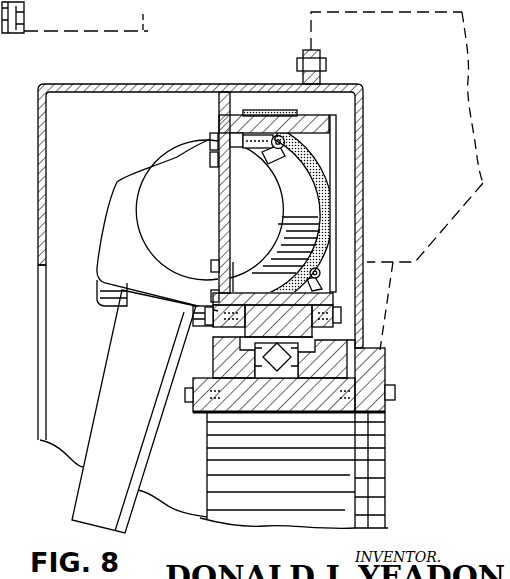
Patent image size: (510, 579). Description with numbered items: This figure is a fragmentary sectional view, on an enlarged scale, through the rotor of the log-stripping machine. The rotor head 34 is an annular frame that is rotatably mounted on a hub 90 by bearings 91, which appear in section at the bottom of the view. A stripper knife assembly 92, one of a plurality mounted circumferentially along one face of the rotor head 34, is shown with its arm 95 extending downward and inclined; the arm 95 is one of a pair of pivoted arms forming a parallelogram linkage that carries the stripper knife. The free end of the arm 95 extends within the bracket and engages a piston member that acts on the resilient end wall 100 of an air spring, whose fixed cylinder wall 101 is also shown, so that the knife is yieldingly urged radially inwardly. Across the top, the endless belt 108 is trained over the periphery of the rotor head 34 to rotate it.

The rotor head 34 is at (340, 104).
The endless belt 108 is at (268, 110).
The resilient end wall 100 is at (312, 157).
The fixed cylinder wall 101 is at (313, 193).
The stripper knife assembly 92 is at (97, 247).
The arm 95 is at (121, 388).
The hub 90 is at (350, 344).
The bearings 91 is at (278, 346).